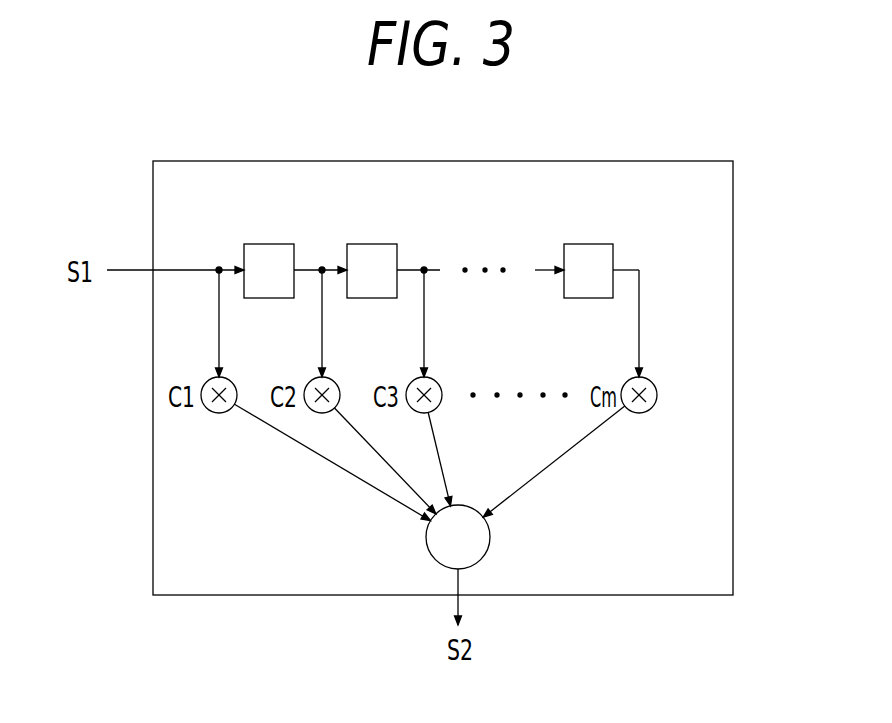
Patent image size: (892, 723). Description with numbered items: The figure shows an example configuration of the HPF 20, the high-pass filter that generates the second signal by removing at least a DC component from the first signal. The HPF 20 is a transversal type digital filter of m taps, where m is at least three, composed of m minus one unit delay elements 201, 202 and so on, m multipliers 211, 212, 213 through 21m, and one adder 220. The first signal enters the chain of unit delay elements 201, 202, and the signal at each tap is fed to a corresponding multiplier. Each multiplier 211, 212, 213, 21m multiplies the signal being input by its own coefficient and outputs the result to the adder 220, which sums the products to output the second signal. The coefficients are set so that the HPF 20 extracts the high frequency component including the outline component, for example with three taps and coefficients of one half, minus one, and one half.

The HPF 20 is at (453, 161).
The unit delay element 201 is at (262, 244).
The unit delay element 202 is at (369, 244).
The multiplier 211 is at (232, 384).
The multiplier 212 is at (335, 384).
The multiplier 213 is at (437, 384).
The multiplier 21m is at (653, 384).
The adder 220 is at (491, 540).